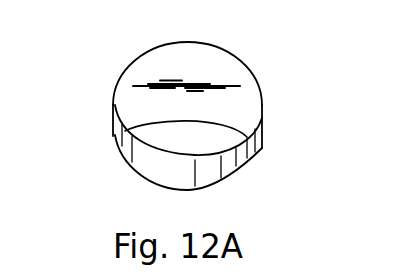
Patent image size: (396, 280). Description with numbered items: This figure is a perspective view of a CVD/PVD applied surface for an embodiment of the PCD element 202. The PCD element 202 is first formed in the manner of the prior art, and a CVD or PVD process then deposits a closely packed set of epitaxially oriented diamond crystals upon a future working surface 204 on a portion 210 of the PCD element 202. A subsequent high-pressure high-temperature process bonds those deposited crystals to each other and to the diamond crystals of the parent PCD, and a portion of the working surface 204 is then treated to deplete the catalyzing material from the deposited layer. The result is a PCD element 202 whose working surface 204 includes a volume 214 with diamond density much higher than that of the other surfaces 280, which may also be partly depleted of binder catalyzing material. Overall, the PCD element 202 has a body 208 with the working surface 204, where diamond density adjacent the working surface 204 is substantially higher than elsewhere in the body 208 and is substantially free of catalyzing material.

The body 208 is at (206, 106).
The other surfaces 280 is at (208, 63).
The portion 210 is at (153, 140).
The working surface 204 is at (185, 151).
The PCD element 202 is at (128, 160).
The volume 214 is at (233, 150).